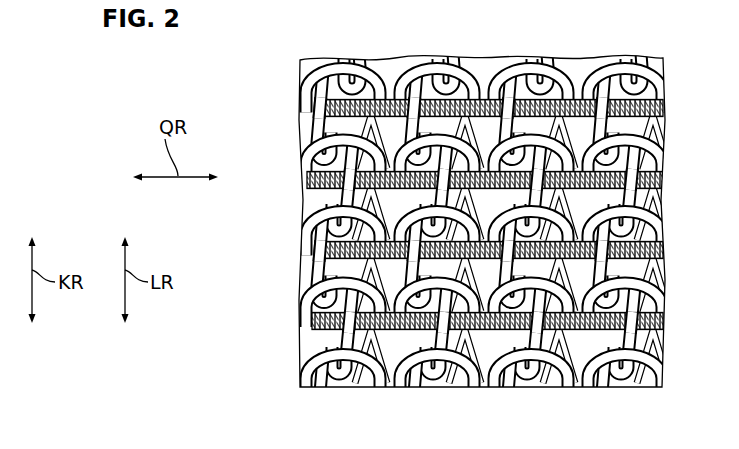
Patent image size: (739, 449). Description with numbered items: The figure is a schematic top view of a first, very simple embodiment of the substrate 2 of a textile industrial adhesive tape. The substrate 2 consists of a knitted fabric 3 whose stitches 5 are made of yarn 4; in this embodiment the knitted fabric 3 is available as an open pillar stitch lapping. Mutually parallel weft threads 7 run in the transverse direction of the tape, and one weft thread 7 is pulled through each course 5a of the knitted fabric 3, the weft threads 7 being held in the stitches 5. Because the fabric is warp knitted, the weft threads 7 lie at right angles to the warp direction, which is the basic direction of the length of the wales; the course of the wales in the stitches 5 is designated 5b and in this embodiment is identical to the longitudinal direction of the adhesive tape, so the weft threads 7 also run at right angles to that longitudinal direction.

The substrate 2 is at (442, 224).
The knitted fabric 3 is at (292, 223).
The yarn 4 is at (484, 59).
The stitches 5 is at (412, 74).
The course 5a is at (292, 297).
The course of wales 5b is at (622, 400).
The weft threads 7 is at (318, 250).